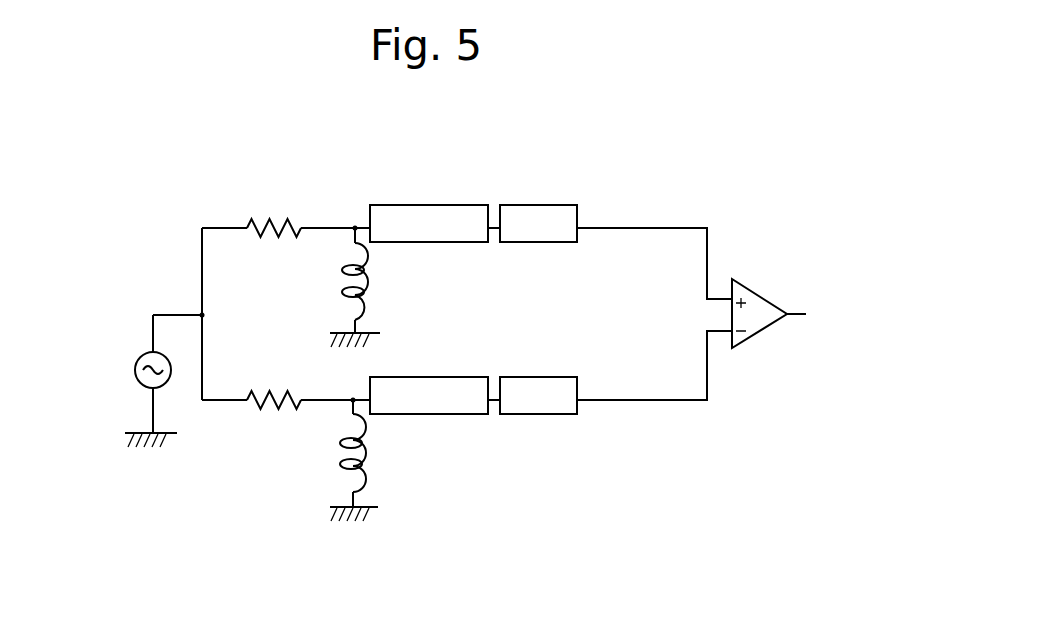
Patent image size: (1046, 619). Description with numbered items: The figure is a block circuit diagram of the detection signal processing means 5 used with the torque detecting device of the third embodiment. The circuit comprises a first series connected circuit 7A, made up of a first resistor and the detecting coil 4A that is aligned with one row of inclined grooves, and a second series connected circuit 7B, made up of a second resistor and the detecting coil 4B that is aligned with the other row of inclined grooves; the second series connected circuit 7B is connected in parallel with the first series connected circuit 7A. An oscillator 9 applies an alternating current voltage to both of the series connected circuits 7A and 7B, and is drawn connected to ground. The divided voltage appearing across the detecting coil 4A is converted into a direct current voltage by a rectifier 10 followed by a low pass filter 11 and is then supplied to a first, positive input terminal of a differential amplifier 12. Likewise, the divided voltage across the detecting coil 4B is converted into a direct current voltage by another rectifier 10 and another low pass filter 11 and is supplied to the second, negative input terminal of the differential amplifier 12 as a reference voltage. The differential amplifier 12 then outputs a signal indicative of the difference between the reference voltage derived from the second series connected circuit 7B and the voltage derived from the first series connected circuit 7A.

The detection signal processing means 5 is at (689, 181).
The first series connected circuit 7A is at (378, 183).
The second series connected circuit 7B is at (402, 526).
The detecting coil 4A is at (342, 281).
The detecting coil 4B is at (337, 464).
The oscillator 9 is at (143, 350).
The rectifier 10 is at (447, 205).
The low pass filter 11 is at (553, 205).
The differential amplifier 12 is at (767, 327).